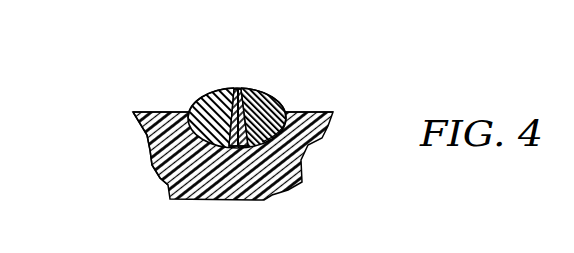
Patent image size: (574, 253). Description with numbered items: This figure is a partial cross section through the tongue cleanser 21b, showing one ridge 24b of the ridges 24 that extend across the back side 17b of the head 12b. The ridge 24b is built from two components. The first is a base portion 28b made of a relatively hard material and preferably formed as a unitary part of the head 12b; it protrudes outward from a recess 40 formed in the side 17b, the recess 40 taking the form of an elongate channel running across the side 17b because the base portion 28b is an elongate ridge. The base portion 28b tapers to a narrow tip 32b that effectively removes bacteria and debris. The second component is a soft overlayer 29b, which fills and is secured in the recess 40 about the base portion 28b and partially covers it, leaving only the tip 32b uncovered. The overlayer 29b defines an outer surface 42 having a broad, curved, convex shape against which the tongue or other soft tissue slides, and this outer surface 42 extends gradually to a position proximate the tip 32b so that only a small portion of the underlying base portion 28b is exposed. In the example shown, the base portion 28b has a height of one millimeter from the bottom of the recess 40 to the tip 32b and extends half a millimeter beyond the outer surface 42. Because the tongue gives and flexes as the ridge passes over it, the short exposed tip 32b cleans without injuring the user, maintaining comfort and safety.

The tongue cleanser 21b is at (103, 65).
The side of head 17b is at (154, 112).
The ridge 24b is at (235, 88).
The narrow tip 32b is at (239, 88).
The overlayer 29b is at (253, 97).
The ridge 24 is at (282, 108).
The recess 40 is at (153, 137).
The outer surface 42 is at (282, 128).
The head 12b is at (286, 186).
The base portion 28b is at (238, 146).